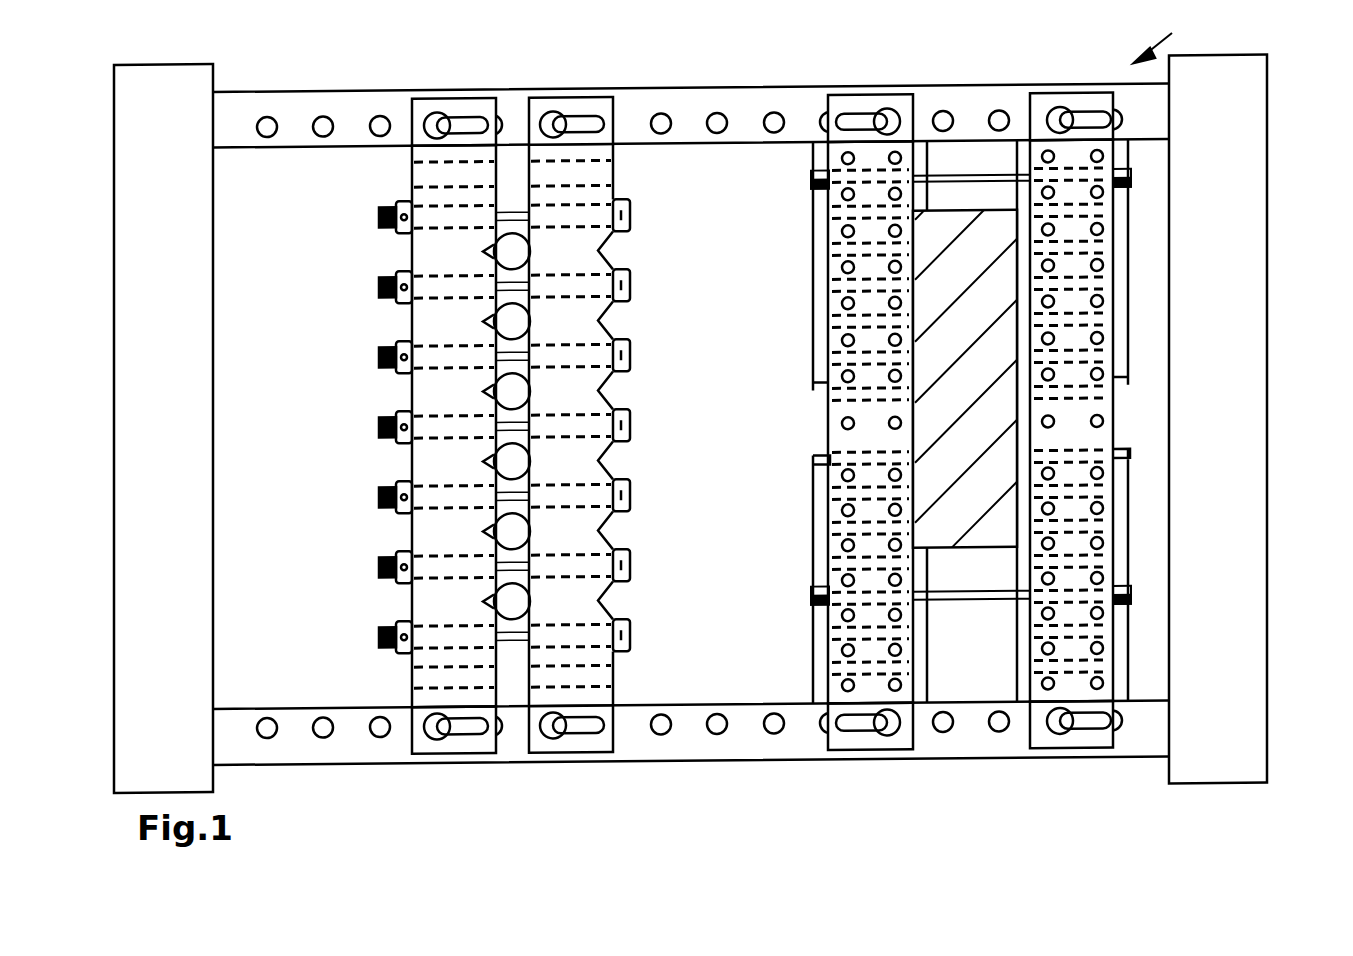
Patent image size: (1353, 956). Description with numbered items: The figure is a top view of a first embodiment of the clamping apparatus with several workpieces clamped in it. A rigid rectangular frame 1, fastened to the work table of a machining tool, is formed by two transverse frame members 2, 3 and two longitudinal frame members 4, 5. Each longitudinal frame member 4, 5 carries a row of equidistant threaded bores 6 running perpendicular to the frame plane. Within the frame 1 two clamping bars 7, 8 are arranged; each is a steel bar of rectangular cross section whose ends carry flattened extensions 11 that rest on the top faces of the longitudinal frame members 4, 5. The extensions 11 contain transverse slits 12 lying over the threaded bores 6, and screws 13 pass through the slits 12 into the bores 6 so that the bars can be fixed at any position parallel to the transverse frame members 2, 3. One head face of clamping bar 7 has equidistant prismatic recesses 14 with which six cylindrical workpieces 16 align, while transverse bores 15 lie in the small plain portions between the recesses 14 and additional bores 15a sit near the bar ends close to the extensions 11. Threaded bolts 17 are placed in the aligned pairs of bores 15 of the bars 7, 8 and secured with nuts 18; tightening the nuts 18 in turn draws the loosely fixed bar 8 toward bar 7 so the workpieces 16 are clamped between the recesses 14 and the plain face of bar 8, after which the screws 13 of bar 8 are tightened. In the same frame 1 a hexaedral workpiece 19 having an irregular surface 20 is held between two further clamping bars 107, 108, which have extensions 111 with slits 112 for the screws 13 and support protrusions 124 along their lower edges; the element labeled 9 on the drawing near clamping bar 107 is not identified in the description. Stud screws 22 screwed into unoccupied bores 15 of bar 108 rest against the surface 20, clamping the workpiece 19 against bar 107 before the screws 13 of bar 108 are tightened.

The rectangular frame 1 is at (1164, 36).
The transverse frame member 2 is at (1235, 735).
The transverse frame member 3 is at (140, 685).
The longitudinal frame member 4 is at (229, 110).
The longitudinal frame member 5 is at (232, 745).
The threaded bores 6 is at (380, 117).
The clamping bar 7 is at (450, 250).
The clamping bar 8 is at (572, 245).
The perforated plate 9 is at (833, 233).
The extension 11 is at (570, 100).
The slit 12 is at (587, 118).
The screw 13 is at (437, 113).
The prismatic recess 14 is at (600, 604).
The bore 15 is at (834, 383).
The additional bore 15a is at (440, 178).
The cylindrical workpiece 16 is at (532, 457).
The threaded bolt 17 is at (632, 355).
The nut 18 is at (393, 550).
The hexaedral workpiece 19 is at (980, 378).
The surface 20 is at (1117, 286).
The stud screw 22 is at (1117, 248).
The clamping bar 107 is at (843, 426).
The clamping bar 108 is at (1117, 330).
The extension 111 is at (904, 100).
The slit 112 is at (1082, 116).
The support protrusion 124 is at (1125, 262).